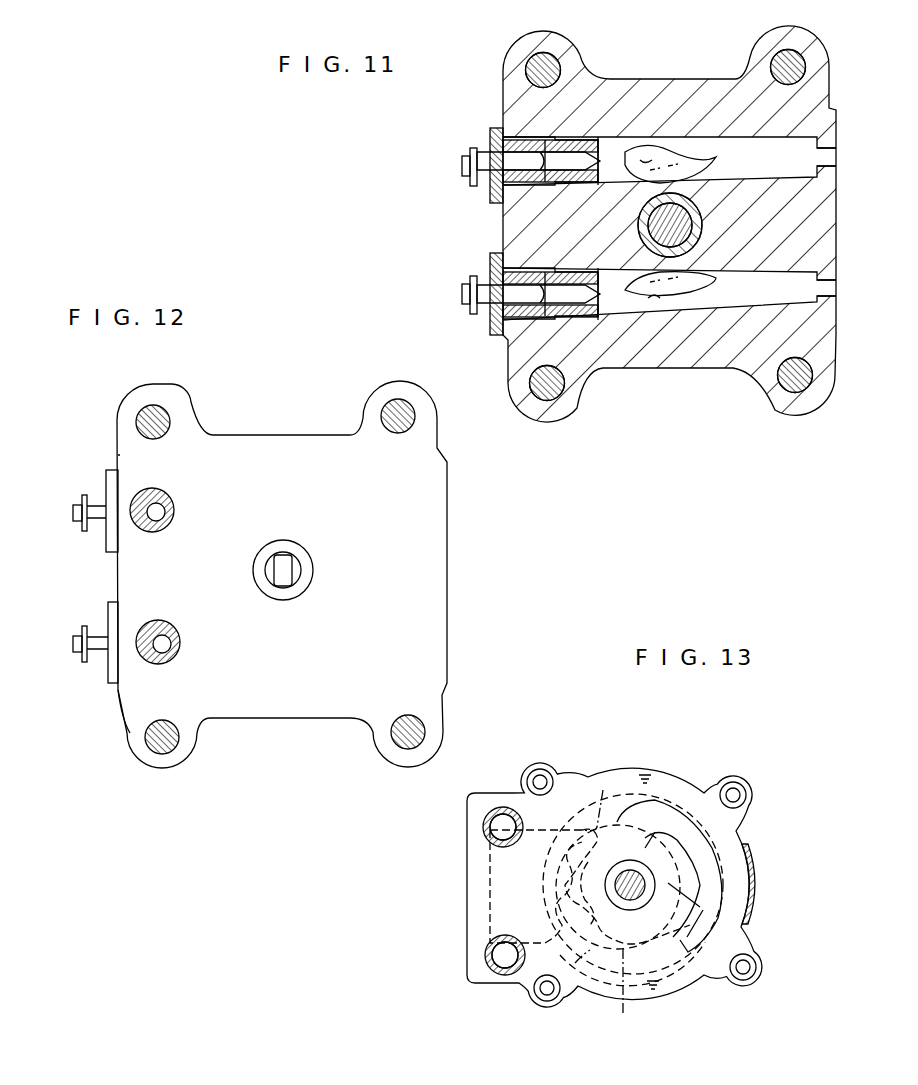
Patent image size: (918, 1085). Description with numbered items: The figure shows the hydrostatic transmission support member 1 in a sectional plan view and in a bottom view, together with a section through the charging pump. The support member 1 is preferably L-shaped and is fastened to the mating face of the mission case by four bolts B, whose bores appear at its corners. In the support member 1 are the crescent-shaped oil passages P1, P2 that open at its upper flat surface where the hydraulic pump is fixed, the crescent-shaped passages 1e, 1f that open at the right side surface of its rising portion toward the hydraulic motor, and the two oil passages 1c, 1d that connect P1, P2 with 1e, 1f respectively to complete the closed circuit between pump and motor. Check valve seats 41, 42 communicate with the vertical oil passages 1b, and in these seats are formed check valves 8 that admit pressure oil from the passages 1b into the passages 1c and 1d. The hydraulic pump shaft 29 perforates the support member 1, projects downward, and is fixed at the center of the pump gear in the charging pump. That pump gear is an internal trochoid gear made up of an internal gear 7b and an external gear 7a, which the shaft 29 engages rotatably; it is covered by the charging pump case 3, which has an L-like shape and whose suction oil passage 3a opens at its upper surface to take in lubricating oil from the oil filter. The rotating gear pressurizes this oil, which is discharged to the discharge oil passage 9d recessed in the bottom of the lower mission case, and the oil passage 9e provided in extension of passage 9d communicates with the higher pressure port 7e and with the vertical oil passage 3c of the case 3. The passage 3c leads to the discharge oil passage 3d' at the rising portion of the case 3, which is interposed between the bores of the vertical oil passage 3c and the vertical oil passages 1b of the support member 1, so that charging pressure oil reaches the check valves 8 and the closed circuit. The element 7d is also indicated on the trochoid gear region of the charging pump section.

In FIG. 11, the hydrostatic transmission support member 1 is at (670, 76).
In FIG. 12, the hydrostatic transmission support member 1 is at (292, 728).
In FIG. 11, the vertical oil passage 1b is at (508, 188).
In FIG. 12, the vertical oil passage 1b is at (172, 522).
In FIG. 11, the oil passage 1c is at (710, 164).
In FIG. 11, the oil passage 1d is at (707, 288).
In FIG. 11, the crescent-shaped oil passage 1e is at (838, 158).
In FIG. 11, the crescent-shaped oil passage 1f is at (838, 291).
In FIG. 11, the check valve 8 is at (462, 166).
In FIG. 12, the check valve 8 is at (72, 514).
In FIG. 11, the hydraulic pump shaft 29 is at (702, 236).
In FIG. 12, the hydraulic pump shaft 29 is at (266, 578).
In FIG. 13, the hydraulic pump shaft 29 is at (620, 867).
In FIG. 11, the check valve seat 41 is at (492, 130).
In FIG. 12, the check valve seat 41 is at (100, 543).
In FIG. 11, the check valve seat 42 is at (493, 258).
In FIG. 12, the check valve seat 42 is at (110, 677).
In FIG. 11, the bolt B is at (566, 70).
In FIG. 12, the bolt B is at (168, 410).
In FIG. 11, the crescent-shaped oil passage P1 is at (631, 162).
In FIG. 11, the crescent-shaped oil passage P2 is at (637, 302).
In FIG. 13, the charging pump case 3 is at (754, 883).
In FIG. 13, the suction oil passage 3a is at (691, 960).
In FIG. 13, the vertical oil passage 3c is at (490, 834).
In FIG. 12, the discharge oil passage 3d' is at (100, 601).
In FIG. 13, the discharge oil passage 3d' is at (459, 898).
In FIG. 13, the external gear 7a is at (575, 963).
In FIG. 13, the internal gear 7b is at (623, 1013).
In FIG. 13, the vane 7d is at (722, 900).
In FIG. 13, the higher pressure port 7e is at (577, 887).
In FIG. 13, the discharge oil passage 9d is at (603, 790).
In FIG. 13, the oil passage 9e is at (488, 882).